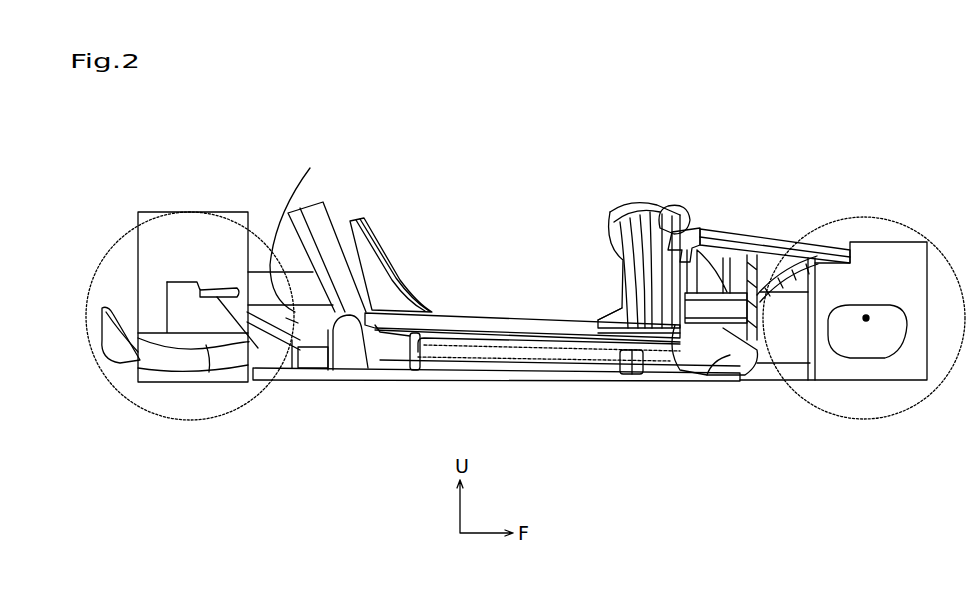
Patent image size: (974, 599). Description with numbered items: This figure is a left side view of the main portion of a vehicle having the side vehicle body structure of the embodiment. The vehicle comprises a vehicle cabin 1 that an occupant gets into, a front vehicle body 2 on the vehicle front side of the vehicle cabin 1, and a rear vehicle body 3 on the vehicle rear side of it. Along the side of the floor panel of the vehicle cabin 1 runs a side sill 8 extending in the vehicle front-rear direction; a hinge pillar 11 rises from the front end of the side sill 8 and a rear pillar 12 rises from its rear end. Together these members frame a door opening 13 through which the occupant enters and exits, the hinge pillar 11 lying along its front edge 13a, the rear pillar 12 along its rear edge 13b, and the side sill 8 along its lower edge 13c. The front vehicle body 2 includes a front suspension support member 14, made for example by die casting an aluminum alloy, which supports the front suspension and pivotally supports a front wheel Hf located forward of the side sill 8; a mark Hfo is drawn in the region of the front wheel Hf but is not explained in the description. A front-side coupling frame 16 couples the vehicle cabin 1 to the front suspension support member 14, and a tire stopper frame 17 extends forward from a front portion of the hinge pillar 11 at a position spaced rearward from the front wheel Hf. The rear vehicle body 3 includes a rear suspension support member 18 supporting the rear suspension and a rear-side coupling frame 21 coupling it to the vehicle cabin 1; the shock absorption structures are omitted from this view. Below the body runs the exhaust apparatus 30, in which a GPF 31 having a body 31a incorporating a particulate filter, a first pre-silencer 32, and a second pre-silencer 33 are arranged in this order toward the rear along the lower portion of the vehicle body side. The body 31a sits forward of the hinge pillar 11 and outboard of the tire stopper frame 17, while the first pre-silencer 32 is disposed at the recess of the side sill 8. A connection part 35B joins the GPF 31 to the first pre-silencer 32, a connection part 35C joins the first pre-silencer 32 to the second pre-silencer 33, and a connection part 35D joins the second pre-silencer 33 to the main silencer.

The vehicle cabin 1 is at (647, 179).
The front vehicle body 2 is at (806, 163).
The rear vehicle body 3 is at (260, 212).
The side sill 8 is at (450, 390).
The hinge pillar 11 is at (665, 208).
The rear pillar 12 is at (333, 222).
The door opening 13 is at (550, 246).
The front edge 13a is at (618, 271).
The rear edge 13b is at (388, 232).
The lower edge 13c is at (539, 310).
The front suspension support member 14 is at (872, 242).
The front-side coupling frame 16 is at (750, 232).
The tire stopper frame 17 is at (768, 330).
The rear suspension support member 18 is at (162, 212).
The rear-side coupling frame 21 is at (291, 422).
The exhaust apparatus 30 is at (548, 375).
The GPF 31 is at (766, 382).
The body 31a is at (693, 372).
The first pre-silencer 32 is at (497, 380).
The second pre-silencer 33 is at (335, 380).
The connection part 35B is at (630, 380).
The connection part 35C is at (370, 378).
The connection part 35D is at (307, 321).
The floor opening Hfo is at (867, 315).
The front wheel Hf is at (890, 420).